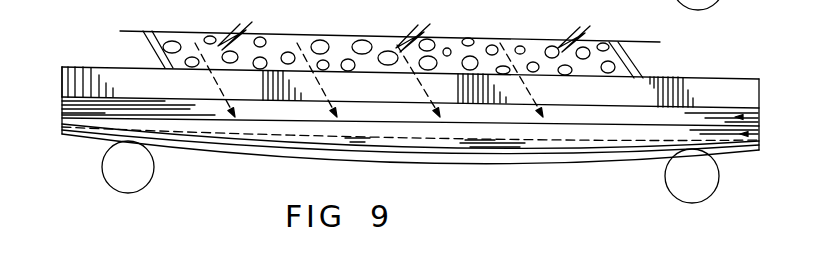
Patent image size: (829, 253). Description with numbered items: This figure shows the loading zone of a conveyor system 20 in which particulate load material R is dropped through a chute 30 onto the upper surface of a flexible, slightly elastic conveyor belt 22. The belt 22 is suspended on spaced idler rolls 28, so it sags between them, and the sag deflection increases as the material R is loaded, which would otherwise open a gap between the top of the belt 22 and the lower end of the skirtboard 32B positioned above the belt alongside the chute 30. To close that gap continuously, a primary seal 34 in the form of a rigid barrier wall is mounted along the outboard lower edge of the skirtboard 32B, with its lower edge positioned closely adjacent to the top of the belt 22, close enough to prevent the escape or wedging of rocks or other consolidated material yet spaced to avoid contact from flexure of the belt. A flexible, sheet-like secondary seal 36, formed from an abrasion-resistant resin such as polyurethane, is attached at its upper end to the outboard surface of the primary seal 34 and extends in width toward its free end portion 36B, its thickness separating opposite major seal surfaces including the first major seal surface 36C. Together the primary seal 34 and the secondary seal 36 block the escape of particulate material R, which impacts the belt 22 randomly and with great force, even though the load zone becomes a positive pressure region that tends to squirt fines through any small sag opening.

The conveyor system 20 is at (674, 0).
The belt 22 is at (423, 163).
The idler roll 28 is at (678, 187).
The chute 30 is at (628, 58).
The skirtboard 32B is at (722, 87).
The primary seal 34 is at (759, 115).
The secondary seal 36 is at (758, 133).
The free end portion 36B is at (482, 153).
The first major seal surface 36C is at (395, 151).
The particulate material R is at (472, 38).